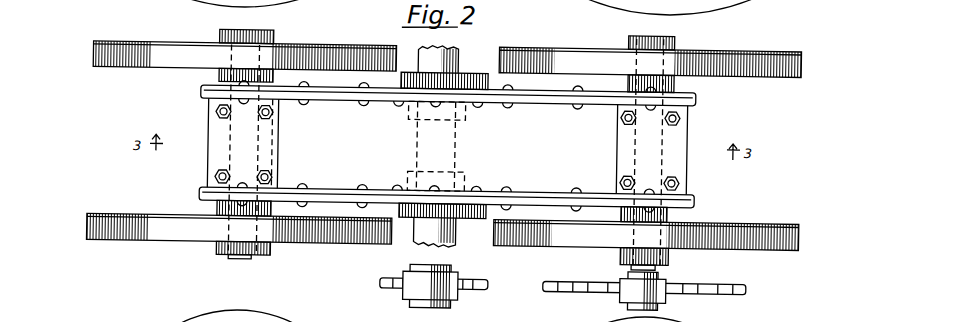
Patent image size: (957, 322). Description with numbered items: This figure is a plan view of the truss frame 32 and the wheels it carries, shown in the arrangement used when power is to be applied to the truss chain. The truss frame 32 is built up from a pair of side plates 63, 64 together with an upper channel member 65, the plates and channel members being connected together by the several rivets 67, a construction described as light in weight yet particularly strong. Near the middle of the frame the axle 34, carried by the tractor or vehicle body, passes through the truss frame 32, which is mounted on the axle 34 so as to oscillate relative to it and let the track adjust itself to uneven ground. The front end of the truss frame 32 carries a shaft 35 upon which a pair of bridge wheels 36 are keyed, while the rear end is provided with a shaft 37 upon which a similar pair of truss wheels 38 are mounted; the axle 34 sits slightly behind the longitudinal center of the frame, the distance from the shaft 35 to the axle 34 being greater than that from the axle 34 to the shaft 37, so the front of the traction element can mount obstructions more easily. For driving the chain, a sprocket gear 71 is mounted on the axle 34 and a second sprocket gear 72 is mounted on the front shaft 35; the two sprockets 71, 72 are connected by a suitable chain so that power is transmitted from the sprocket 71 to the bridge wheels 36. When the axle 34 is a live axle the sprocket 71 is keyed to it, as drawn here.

The truss frame 32 is at (695, 197).
The axle 34 is at (452, 244).
The shaft 35 is at (657, 262).
The bridge wheels 36 is at (535, 52).
The shaft 37 is at (252, 262).
The truss wheels 38 is at (313, 57).
The side plate 63 is at (595, 89).
The side plate 64 is at (567, 204).
The upper channel member 65 is at (387, 145).
The rivets 67 is at (515, 190).
The sprocket gear 71 is at (392, 285).
The sprocket gear 72 is at (548, 284).